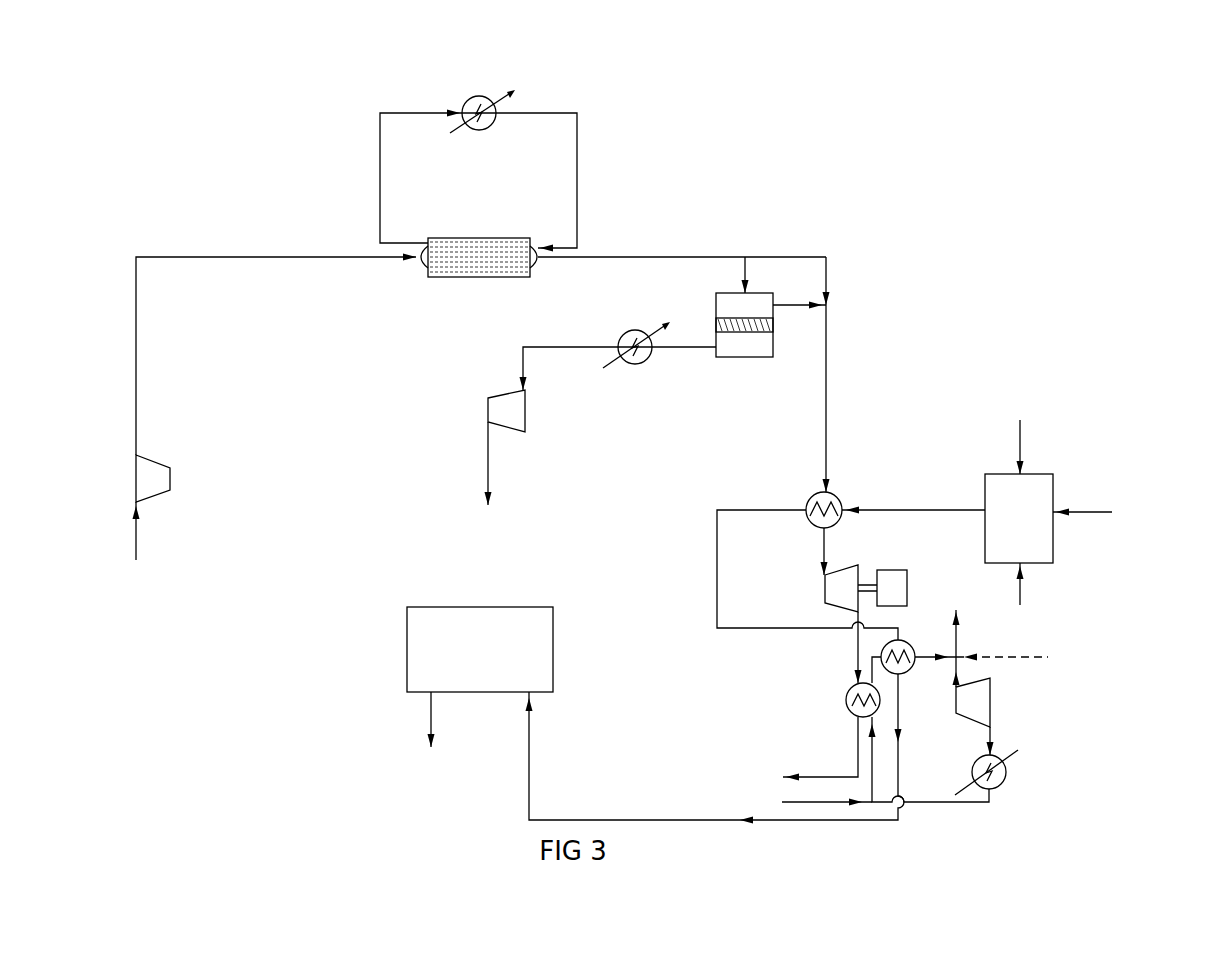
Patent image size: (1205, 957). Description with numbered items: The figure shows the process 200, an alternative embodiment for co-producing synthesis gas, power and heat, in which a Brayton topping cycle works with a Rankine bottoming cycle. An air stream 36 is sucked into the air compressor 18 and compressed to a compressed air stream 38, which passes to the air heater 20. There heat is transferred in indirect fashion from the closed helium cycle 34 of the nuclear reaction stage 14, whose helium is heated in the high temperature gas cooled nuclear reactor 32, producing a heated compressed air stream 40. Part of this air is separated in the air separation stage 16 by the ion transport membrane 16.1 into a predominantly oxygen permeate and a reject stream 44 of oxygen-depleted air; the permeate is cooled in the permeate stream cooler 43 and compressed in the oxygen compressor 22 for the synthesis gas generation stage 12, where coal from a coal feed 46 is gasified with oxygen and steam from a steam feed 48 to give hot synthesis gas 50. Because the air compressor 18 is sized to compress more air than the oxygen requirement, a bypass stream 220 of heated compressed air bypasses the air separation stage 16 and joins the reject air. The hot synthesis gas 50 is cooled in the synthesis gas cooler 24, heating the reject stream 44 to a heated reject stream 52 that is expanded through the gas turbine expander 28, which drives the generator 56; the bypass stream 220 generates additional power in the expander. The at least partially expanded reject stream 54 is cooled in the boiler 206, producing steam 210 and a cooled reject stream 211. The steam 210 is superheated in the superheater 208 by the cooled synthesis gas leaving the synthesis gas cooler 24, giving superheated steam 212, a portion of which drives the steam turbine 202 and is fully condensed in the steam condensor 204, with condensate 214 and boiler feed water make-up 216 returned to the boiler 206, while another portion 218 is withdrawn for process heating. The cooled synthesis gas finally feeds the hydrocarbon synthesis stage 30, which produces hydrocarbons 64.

The synthesis gas generation stage 12 is at (1007, 523).
The nuclear reaction stage 14 is at (620, 118).
The air separation stage 16 is at (721, 366).
The ion transport membrane 16.1 is at (757, 333).
The air compressor 18 is at (152, 470).
The air heater 20 is at (452, 278).
The oxygen compressor 22 is at (527, 411).
The synthesis gas cooler 24 is at (826, 492).
The gas turbine expander 28 is at (826, 588).
The hydrocarbon synthesis stage 30 is at (468, 668).
The high temperature gas cooled nuclear reactor 32 is at (463, 100).
The closed helium cycle 34 is at (380, 175).
The air stream 36 is at (140, 538).
The compressed air stream 38 is at (138, 333).
The heated compressed air stream 40 is at (676, 257).
The permeate stream cooler 43 is at (655, 360).
The reject stream 44 is at (828, 406).
The coal feed 46 is at (1022, 441).
The steam feed 48 is at (1085, 513).
The hot synthesis gas 50 is at (953, 510).
The heated reject stream 52 is at (830, 536).
The at least partially expanded reject stream 54 is at (857, 637).
The generator 56 is at (897, 571).
The hydrocarbons 64 is at (433, 706).
The process 200 is at (1008, 146).
The steam turbine 202 is at (975, 701).
The steam condensor 204 is at (1008, 772).
The boiler 206 is at (847, 697).
The superheater 208 is at (907, 671).
The steam 210 is at (870, 671).
The cooled reject stream 211 is at (823, 775).
The superheated steam 212 is at (917, 653).
The condensate 214 is at (947, 805).
The boiler feed water make-up 216 is at (790, 800).
The withdrawn portion of superheated steam 218 is at (960, 642).
The bypass stream 220 is at (828, 258).